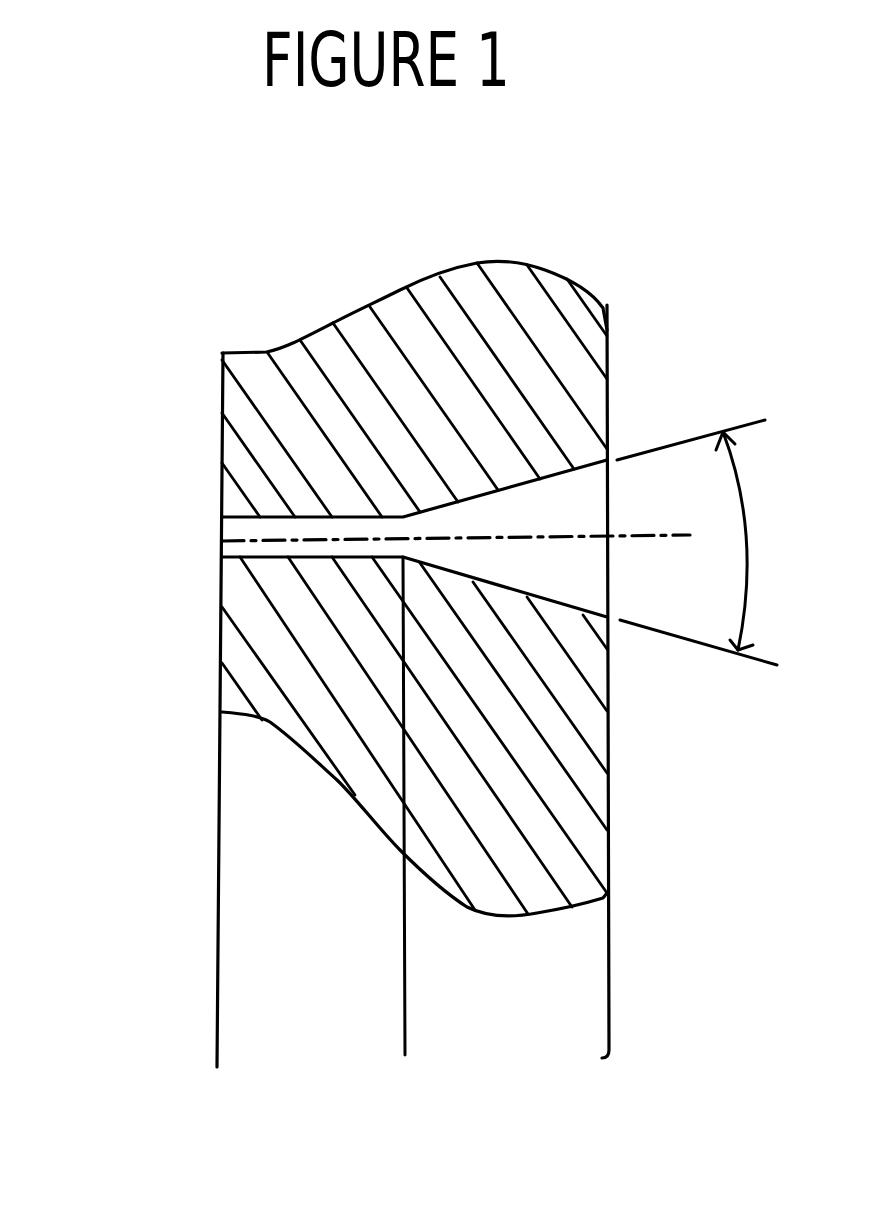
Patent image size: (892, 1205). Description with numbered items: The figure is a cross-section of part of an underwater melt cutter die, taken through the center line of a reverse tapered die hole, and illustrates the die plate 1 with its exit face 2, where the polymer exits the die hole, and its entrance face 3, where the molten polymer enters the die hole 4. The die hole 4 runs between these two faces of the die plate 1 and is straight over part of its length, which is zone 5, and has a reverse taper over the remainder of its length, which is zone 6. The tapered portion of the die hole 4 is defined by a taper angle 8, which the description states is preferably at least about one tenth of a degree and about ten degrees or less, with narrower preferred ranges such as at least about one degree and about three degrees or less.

The die plate 1 is at (342, 358).
The exit face 2 is at (608, 360).
The entrance face 3 is at (222, 483).
The die hole 4 is at (222, 541).
The zone 5 is at (405, 973).
The zone 6 is at (609, 973).
The taper angle 8 is at (697, 542).